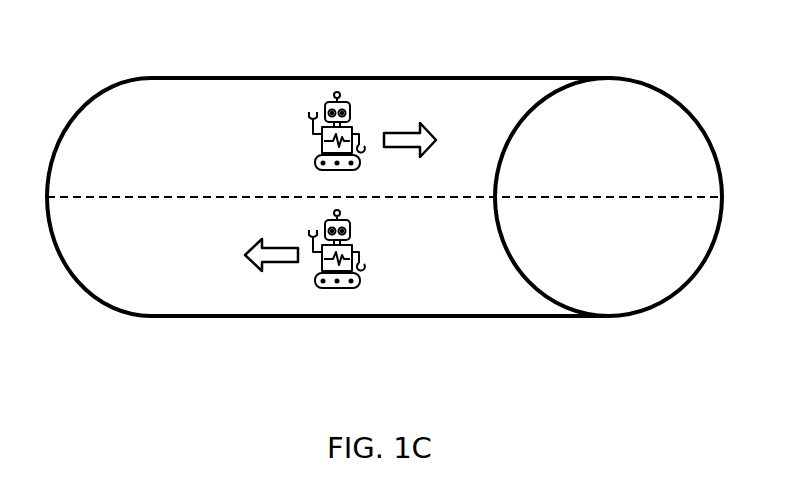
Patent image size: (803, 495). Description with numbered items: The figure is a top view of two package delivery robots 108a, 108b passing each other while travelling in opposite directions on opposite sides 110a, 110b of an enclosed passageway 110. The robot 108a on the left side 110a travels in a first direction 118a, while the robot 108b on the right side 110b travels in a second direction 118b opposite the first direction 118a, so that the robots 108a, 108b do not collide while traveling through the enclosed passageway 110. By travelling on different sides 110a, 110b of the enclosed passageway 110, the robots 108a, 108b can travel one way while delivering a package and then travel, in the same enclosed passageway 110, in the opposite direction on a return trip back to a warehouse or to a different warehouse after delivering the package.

The enclosed passageway 110 is at (495, 78).
The left side 110a is at (175, 154).
The right side 110b is at (175, 262).
The package delivery robot 108a is at (336, 92).
The package delivery robot 108b is at (337, 290).
The first direction 118a is at (430, 133).
The second direction 118b is at (276, 246).